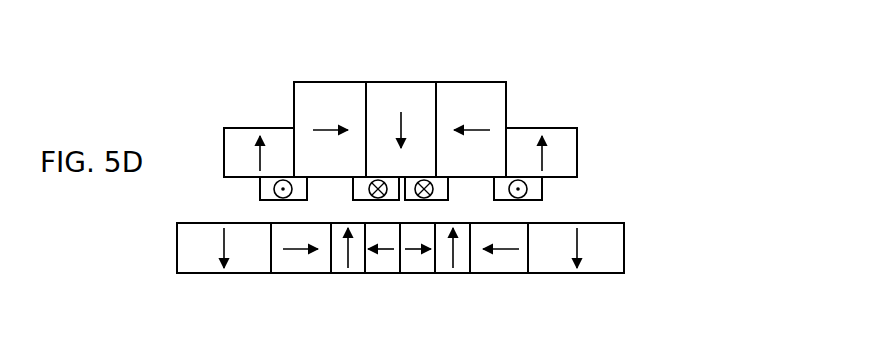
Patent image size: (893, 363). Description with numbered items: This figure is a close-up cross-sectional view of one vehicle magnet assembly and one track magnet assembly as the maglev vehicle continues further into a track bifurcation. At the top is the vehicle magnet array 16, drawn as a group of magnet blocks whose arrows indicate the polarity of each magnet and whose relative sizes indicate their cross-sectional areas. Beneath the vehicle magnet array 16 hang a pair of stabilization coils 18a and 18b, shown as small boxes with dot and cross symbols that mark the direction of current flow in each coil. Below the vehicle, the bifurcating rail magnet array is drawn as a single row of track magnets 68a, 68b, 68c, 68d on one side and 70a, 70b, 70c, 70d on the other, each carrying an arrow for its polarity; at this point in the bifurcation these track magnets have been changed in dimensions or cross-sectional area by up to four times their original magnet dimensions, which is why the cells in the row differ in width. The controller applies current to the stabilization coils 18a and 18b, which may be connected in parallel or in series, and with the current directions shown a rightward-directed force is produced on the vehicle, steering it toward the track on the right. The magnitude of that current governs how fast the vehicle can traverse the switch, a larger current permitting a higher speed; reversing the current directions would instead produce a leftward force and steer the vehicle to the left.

The vehicle magnet array 16 is at (488, 108).
The stabilization coil 18a is at (366, 194).
The stabilization coil 18b is at (506, 194).
The track magnet 68a is at (222, 276).
The track magnet 68b is at (300, 276).
The track magnet 68c is at (348, 276).
The track magnet 68d is at (381, 276).
The track magnet 70a is at (578, 276).
The track magnet 70b is at (498, 276).
The track magnet 70c is at (453, 276).
The track magnet 70d is at (418, 276).